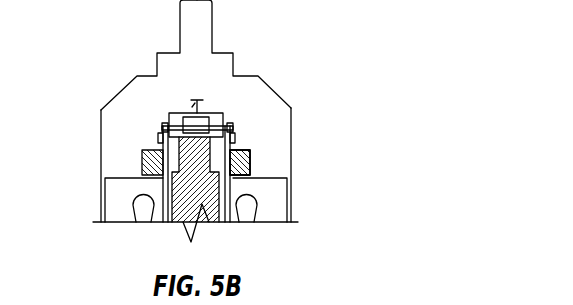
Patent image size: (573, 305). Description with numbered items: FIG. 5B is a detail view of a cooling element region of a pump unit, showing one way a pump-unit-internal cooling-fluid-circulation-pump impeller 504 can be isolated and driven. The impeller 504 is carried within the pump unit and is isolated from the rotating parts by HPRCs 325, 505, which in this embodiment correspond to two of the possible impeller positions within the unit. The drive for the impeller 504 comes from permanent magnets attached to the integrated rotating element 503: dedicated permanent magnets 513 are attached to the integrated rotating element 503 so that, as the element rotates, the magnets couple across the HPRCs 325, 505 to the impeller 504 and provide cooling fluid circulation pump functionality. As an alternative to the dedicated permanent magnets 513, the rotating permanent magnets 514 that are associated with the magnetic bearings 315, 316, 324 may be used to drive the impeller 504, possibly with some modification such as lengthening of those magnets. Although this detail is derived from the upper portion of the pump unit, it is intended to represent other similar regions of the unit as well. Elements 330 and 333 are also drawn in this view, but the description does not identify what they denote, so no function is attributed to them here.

The cooling-fluid-circulation-pump impeller 504 is at (173, 112).
The HPRC 505 is at (235, 125).
The dedicated permanent magnets 513 is at (162, 126).
The HPRC 325 is at (142, 150).
The sleeve 330 is at (164, 181).
The integrated rotating element 503 is at (183, 196).
The base 333 is at (101, 212).
The rotating permanent magnets 514 is at (236, 149).
The magnetic bearing 315 is at (243, 167).
The magnetic bearing 316 is at (240, 162).
The magnetic bearing 324 is at (240, 162).